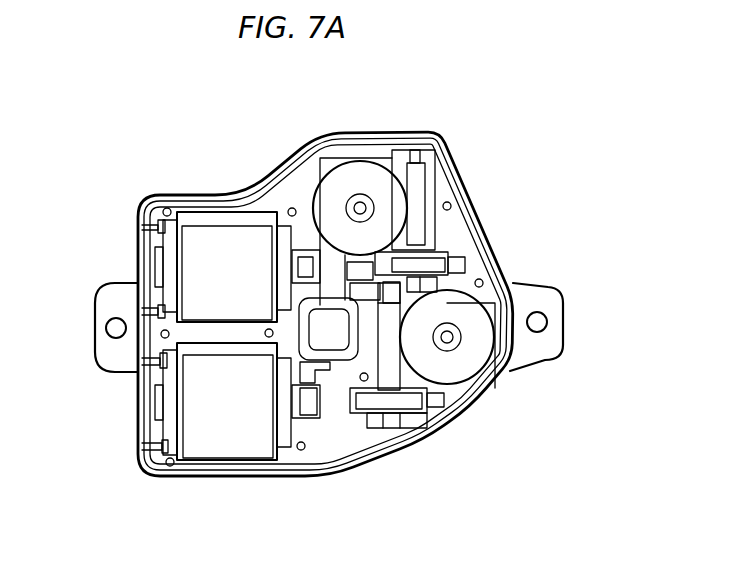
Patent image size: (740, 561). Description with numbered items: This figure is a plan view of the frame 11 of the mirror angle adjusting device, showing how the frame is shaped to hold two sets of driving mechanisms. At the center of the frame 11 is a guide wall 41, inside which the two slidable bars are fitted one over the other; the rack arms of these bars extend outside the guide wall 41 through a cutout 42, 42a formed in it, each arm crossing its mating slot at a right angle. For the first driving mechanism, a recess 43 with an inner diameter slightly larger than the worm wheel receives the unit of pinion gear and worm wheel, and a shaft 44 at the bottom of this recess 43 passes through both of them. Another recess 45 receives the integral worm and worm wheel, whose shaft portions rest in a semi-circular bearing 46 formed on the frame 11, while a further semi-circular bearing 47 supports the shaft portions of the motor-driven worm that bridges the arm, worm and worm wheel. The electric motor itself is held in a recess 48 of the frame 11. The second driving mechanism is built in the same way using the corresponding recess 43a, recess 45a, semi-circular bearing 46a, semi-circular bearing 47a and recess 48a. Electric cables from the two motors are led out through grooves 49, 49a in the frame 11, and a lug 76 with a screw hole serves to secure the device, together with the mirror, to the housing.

The frame 11 is at (458, 146).
The guide wall 41 is at (328, 412).
The cutout 42 is at (305, 245).
The cutout 42a is at (436, 336).
The recess 43 is at (363, 160).
The recess 43a is at (463, 362).
The shaft 44 is at (358, 203).
The recess 45 is at (418, 183).
The recess 45a is at (383, 413).
The semi-circular bearing 46 is at (412, 150).
The semi-circular bearing 46a is at (390, 290).
The semi-circular bearing 47 is at (296, 268).
The semi-circular bearing 47a is at (296, 403).
The recess 48 is at (213, 236).
The recess 48a is at (227, 437).
The groove 49 is at (142, 310).
The groove 49a is at (140, 363).
The lug 76 is at (102, 345).